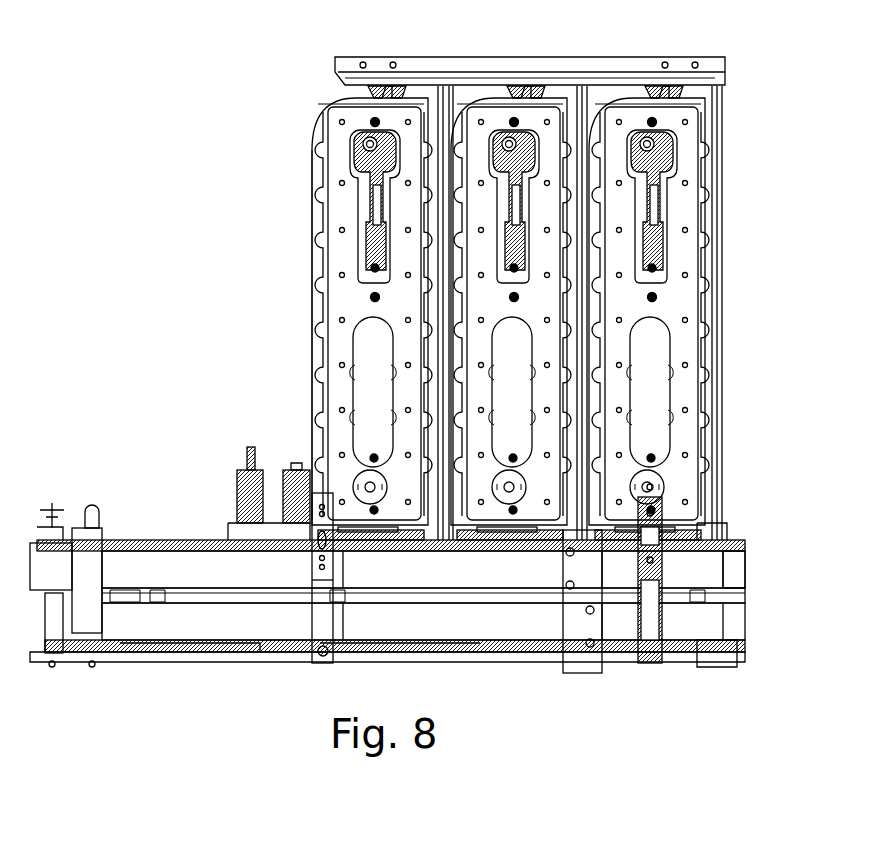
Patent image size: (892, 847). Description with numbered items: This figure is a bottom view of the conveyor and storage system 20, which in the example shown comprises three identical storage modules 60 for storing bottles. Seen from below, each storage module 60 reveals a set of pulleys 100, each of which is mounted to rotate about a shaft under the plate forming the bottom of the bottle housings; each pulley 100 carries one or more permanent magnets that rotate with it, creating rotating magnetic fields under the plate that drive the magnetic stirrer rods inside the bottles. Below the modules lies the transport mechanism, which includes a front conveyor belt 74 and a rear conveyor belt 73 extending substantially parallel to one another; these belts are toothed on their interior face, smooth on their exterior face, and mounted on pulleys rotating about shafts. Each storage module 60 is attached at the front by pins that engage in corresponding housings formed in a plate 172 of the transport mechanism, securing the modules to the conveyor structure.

The conveyor and storage system 20 is at (747, 465).
The storage module 60 is at (290, 124).
The rear conveyor belt 73 is at (153, 567).
The front conveyor belt 74 is at (177, 625).
The pulley 100 is at (312, 273).
The plate 172 is at (428, 540).